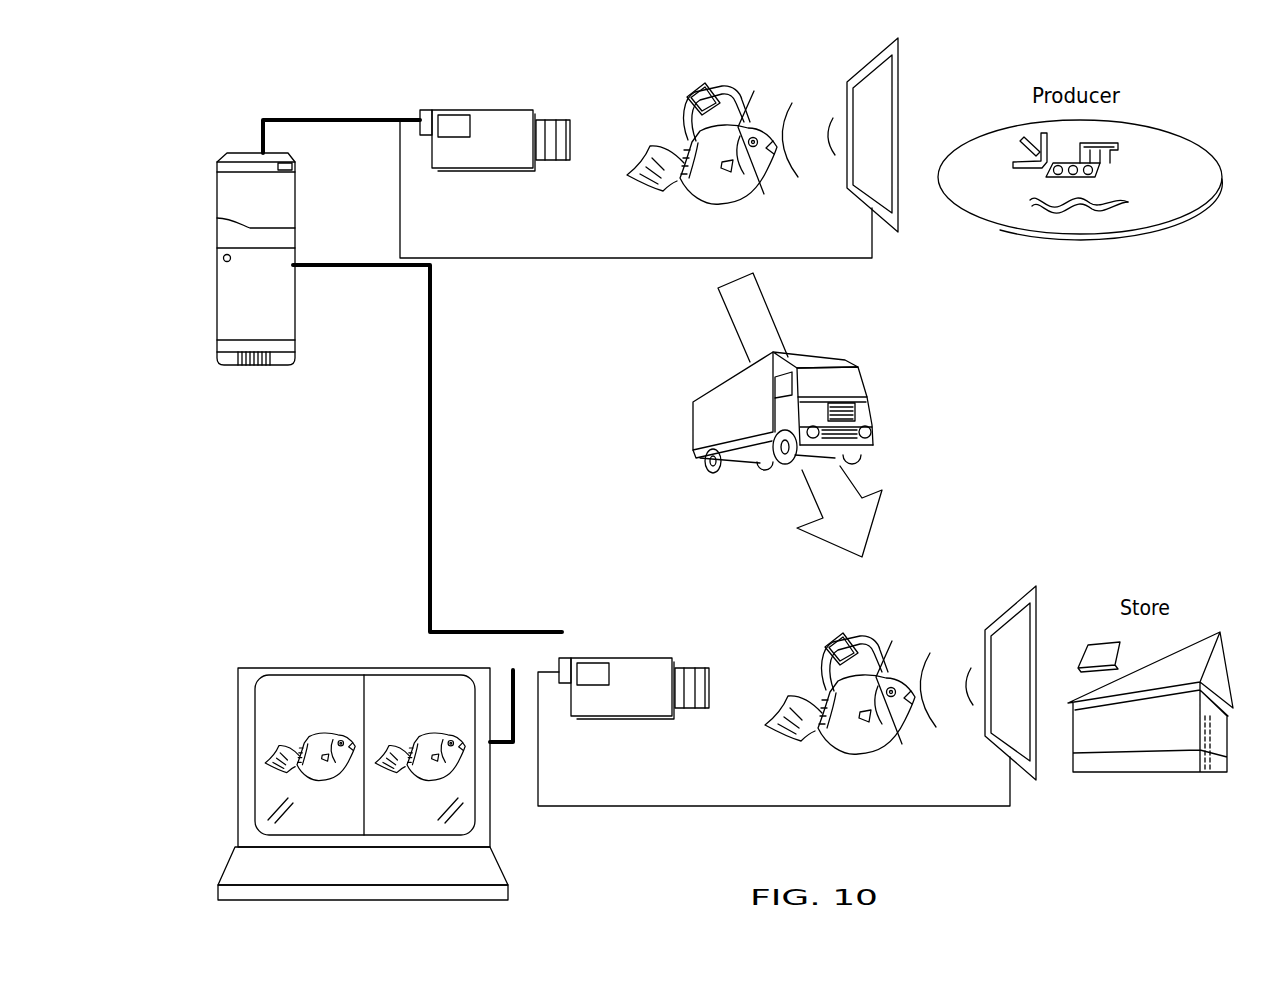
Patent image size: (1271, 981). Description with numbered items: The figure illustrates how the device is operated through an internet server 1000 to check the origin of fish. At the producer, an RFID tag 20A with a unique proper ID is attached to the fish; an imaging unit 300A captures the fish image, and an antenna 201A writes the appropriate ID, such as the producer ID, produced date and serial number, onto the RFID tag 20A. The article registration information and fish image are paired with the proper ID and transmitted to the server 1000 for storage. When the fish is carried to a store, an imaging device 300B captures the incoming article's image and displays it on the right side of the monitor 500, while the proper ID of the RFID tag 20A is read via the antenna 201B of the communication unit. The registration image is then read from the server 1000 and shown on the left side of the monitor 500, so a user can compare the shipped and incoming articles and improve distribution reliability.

The server 1000 is at (217, 206).
The imaging unit 300A is at (482, 170).
The imaging device 300B is at (621, 718).
The RFID tag 20A is at (688, 96).
The antenna 201A is at (900, 226).
The antenna 201B is at (1037, 775).
The monitor 500 is at (277, 668).